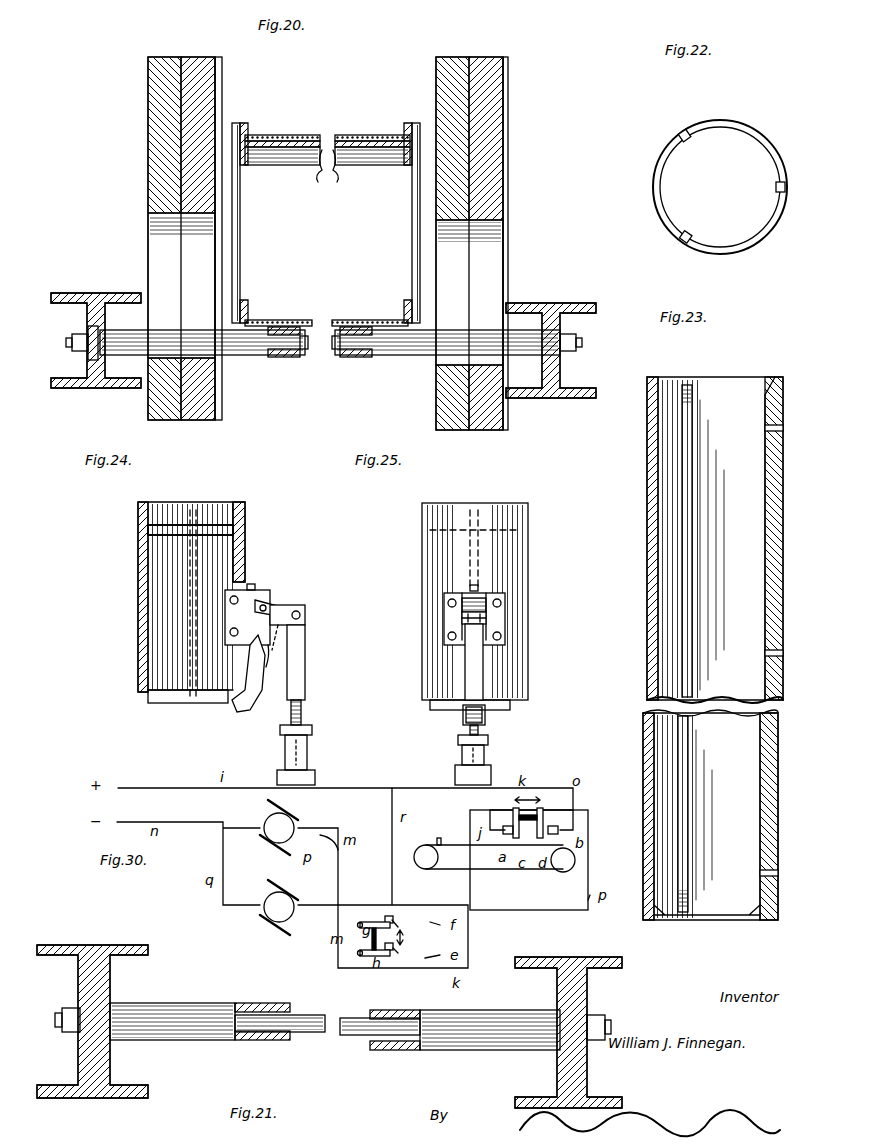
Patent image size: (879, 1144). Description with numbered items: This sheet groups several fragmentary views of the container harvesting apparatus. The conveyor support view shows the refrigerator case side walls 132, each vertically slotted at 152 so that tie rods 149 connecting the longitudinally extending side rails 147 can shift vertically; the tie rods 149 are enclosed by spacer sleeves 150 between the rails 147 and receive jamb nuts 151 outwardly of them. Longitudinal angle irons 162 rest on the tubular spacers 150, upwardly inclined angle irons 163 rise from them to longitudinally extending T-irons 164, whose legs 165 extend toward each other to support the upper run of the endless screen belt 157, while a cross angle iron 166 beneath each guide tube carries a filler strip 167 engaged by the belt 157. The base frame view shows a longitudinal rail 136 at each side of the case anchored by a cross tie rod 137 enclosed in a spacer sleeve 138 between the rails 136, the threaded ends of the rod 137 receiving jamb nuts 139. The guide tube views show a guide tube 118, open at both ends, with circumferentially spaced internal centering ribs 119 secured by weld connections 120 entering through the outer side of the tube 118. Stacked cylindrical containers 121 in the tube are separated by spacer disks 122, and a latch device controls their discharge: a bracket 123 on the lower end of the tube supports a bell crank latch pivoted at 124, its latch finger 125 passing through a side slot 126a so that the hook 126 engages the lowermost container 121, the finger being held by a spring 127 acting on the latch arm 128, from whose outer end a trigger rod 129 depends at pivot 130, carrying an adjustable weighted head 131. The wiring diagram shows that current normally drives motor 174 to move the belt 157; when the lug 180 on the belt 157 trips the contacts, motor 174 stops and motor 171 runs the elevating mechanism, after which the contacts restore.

In FIG. 22, the guide tube 118 is at (752, 150).
In FIG. 23, the guide tube 118 is at (770, 606).
In FIG. 24, the guide tube 118 is at (246, 530).
In FIG. 25, the guide tube 118 is at (428, 542).
In FIG. 22, the internal centering ribs 119 is at (768, 185).
In FIG. 23, the internal centering ribs 119 is at (688, 500).
In FIG. 22, the weld connection 120 is at (788, 197).
In FIG. 23, the weld connection 120 is at (782, 428).
In FIG. 24, the inner tube 121 is at (160, 582).
In FIG. 25, the inner tube 121 is at (440, 712).
In FIG. 24, the spacer disks 122 is at (150, 530).
In FIG. 24, the bracket 123 is at (258, 598).
In FIG. 25, the bracket 123 is at (506, 610).
In FIG. 24, the pivot 124 is at (270, 610).
In FIG. 24, the latch finger 125 is at (258, 675).
In FIG. 24, the hook 126 is at (235, 715).
In FIG. 25, the hook 126 is at (487, 715).
In FIG. 25, the side slot 126a is at (465, 680).
In FIG. 24, the spring 127 is at (262, 603).
In FIG. 25, the spring 127 is at (490, 595).
In FIG. 24, the latch arm 128 is at (275, 640).
In FIG. 24, the trigger rod 129 is at (300, 680).
In FIG. 25, the trigger rod 129 is at (488, 672).
In FIG. 24, the pivot 130 is at (306, 618).
In FIG. 25, the pivot 130 is at (463, 618).
In FIG. 24, the weighted head 131 is at (308, 752).
In FIG. 25, the weighted head 131 is at (490, 752).
In FIG. 20, the side walls 132 is at (188, 96).
In FIG. 21, the longitudinal rail 136 is at (100, 990).
In FIG. 21, the cross tie rod 137 is at (350, 1016).
In FIG. 21, the spacer sleeve 138 is at (210, 1010).
In FIG. 21, the jamb nuts 139 is at (65, 1010).
In FIG. 20, the side rails 147 is at (90, 314).
In FIG. 20, the tie rods 149 is at (338, 348).
In FIG. 20, the spacer sleeves 150 is at (258, 335).
In FIG. 20, the jamb nuts 151 is at (88, 350).
In FIG. 20, the vertical slots 152 is at (170, 255).
In FIG. 20, the endless belt 157 is at (340, 137).
In FIG. 30, the endless belt 157 is at (497, 872).
In FIG. 20, the angle irons 162 is at (244, 310).
In FIG. 20, the inclined angle irons 163 is at (236, 252).
In FIG. 20, the T-irons 164 is at (243, 124).
In FIG. 20, the legs 165 is at (243, 160).
In FIG. 20, the cross angle iron 166 is at (360, 158).
In FIG. 20, the filler strip 167 is at (322, 170).
In FIG. 30, the motor 171 is at (289, 921).
In FIG. 30, the motor 174 is at (289, 842).
In FIG. 30, the lug 180 is at (453, 838).